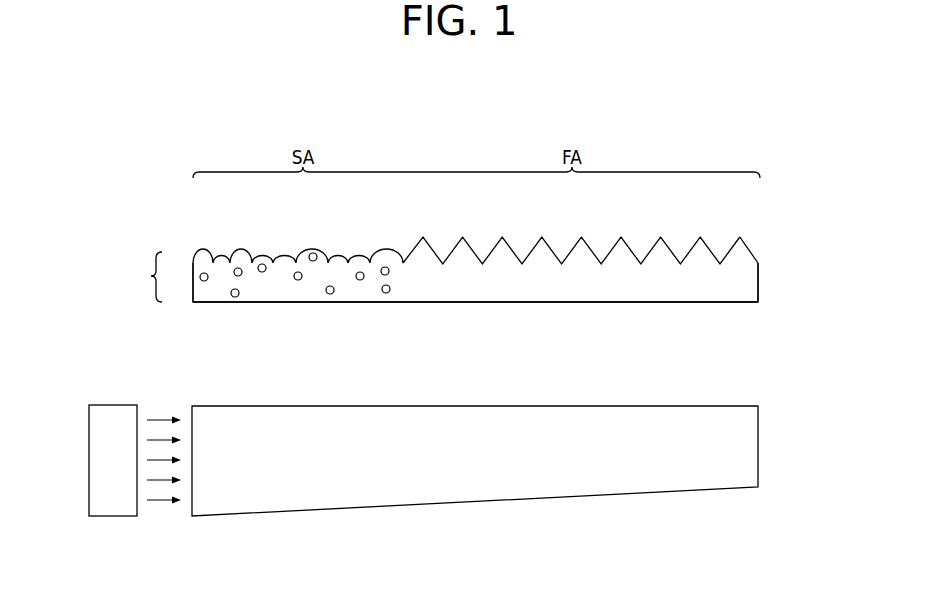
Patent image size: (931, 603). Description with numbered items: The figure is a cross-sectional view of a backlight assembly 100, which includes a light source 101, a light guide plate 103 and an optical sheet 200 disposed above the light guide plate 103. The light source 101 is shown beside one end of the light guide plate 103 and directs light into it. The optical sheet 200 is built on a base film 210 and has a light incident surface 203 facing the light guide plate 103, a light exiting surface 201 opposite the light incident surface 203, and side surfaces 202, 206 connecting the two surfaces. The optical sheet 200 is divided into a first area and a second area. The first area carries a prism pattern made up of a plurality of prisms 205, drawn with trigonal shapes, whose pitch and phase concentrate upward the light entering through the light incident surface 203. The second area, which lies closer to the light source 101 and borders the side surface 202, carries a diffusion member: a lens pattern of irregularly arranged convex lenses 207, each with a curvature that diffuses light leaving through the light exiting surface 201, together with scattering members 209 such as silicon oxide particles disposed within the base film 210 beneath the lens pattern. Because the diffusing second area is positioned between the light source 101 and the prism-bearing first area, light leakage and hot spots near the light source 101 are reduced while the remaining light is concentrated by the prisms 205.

The backlight assembly 100 is at (408, 117).
The light source 101 is at (112, 516).
The light guide plate 103 is at (758, 443).
The optical sheet 200 is at (715, 292).
The light exiting surface 201 is at (748, 248).
The side surface 202 is at (193, 268).
The light incident surface 203 is at (637, 303).
The prism 205 is at (672, 262).
The side surface 206 is at (760, 277).
The lens 207 is at (238, 250).
The scattering member 209 is at (235, 297).
The base film 210 is at (136, 277).